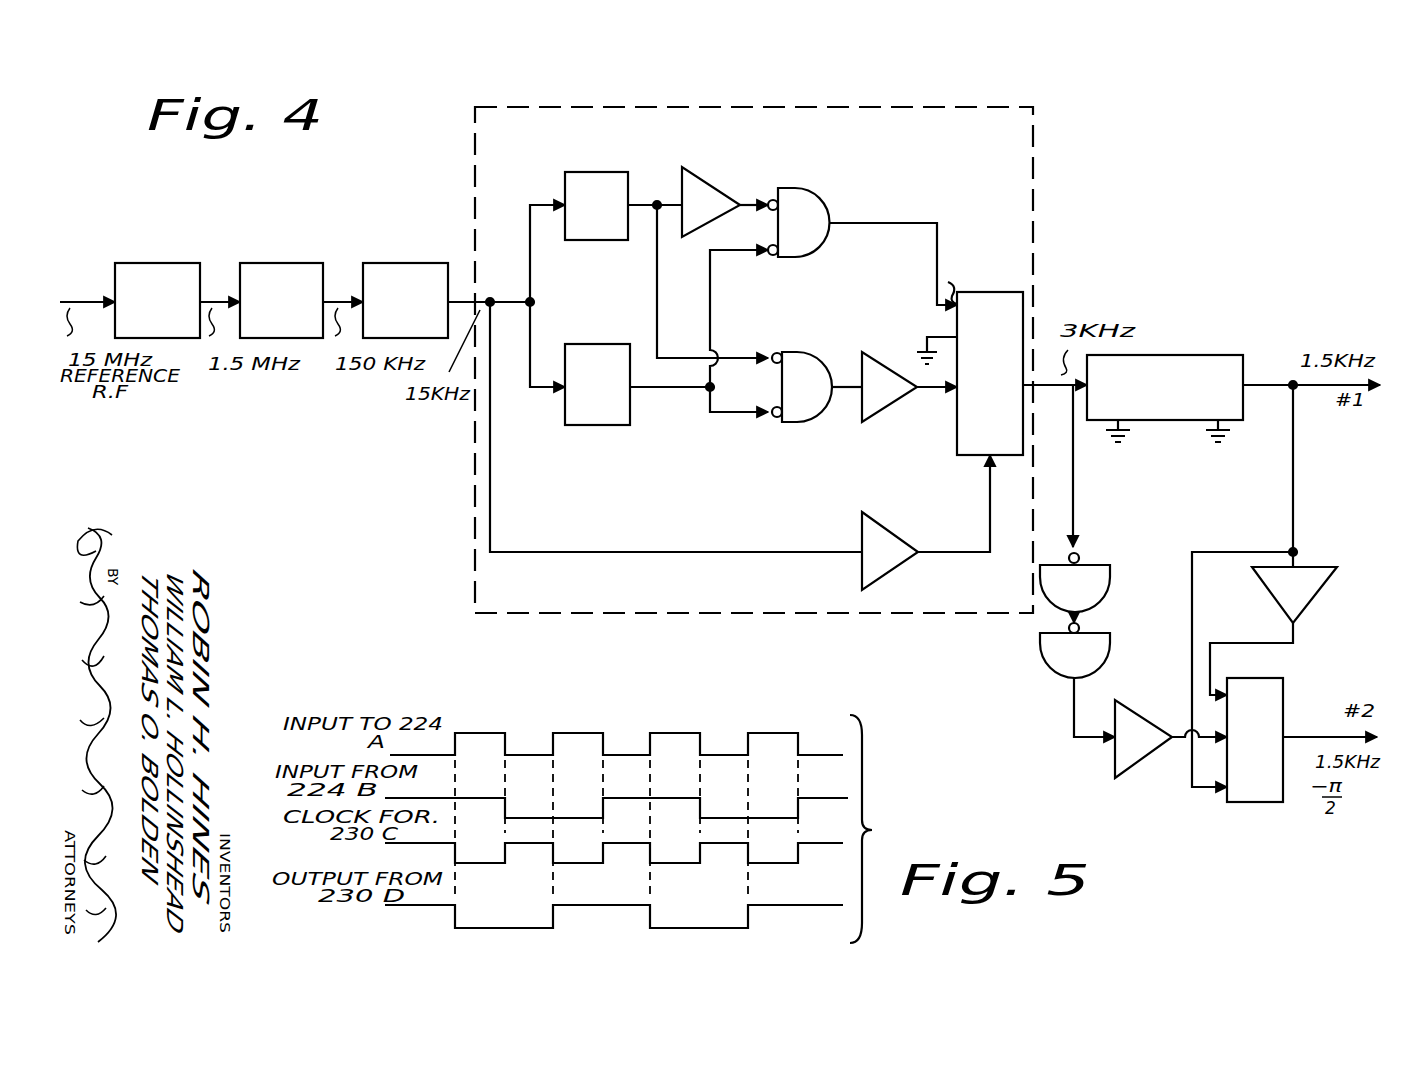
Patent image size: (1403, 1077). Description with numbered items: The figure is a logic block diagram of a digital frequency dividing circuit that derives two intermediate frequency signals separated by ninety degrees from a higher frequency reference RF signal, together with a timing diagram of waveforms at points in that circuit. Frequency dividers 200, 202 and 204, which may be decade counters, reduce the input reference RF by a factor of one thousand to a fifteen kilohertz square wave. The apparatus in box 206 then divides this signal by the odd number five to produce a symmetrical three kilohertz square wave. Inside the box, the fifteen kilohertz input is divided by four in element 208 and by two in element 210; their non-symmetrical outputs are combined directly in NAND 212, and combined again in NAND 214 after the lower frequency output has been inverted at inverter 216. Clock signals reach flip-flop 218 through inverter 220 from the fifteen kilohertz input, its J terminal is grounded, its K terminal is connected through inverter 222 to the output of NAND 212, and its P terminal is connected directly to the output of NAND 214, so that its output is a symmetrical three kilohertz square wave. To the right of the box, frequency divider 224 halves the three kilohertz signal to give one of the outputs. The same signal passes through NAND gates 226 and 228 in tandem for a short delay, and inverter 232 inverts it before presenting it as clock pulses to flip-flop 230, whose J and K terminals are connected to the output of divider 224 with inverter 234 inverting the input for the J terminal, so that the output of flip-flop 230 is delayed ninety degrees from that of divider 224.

The frequency divider 200 is at (177, 255).
The frequency divider 202 is at (300, 255).
The frequency divider 204 is at (422, 252).
The box 206 is at (950, 618).
The divide-by-four element 208 is at (616, 163).
The divide-by-two element 210 is at (630, 425).
The NAND gate 212 is at (827, 337).
The NAND gate 214 is at (812, 207).
The inverter 216 is at (710, 190).
The flip-flop 218 is at (996, 290).
The inverter 220 is at (878, 563).
The inverter 222 is at (872, 400).
The frequency divider 224 is at (1214, 342).
The NAND gate 226 is at (1110, 578).
The NAND gate 228 is at (1052, 660).
The flip-flop 230 is at (1285, 700).
The inverter 232 is at (1152, 690).
The inverter 234 is at (1322, 576).